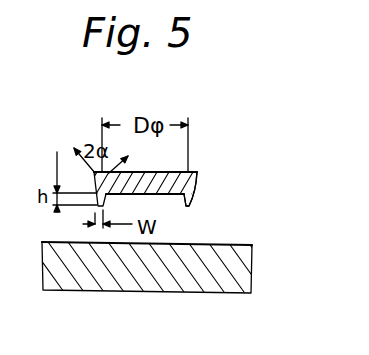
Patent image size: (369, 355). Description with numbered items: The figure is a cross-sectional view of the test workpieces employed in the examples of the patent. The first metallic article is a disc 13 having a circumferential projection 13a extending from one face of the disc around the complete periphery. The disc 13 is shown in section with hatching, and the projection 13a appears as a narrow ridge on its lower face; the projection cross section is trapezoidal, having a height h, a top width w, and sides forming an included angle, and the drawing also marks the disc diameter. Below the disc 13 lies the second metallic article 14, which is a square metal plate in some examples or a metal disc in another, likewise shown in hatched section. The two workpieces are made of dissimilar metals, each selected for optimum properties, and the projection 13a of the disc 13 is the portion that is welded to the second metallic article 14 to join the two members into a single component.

The disc 13 is at (197, 155).
The circumferential projection 13a is at (189, 200).
The second metallic article 14 is at (248, 265).